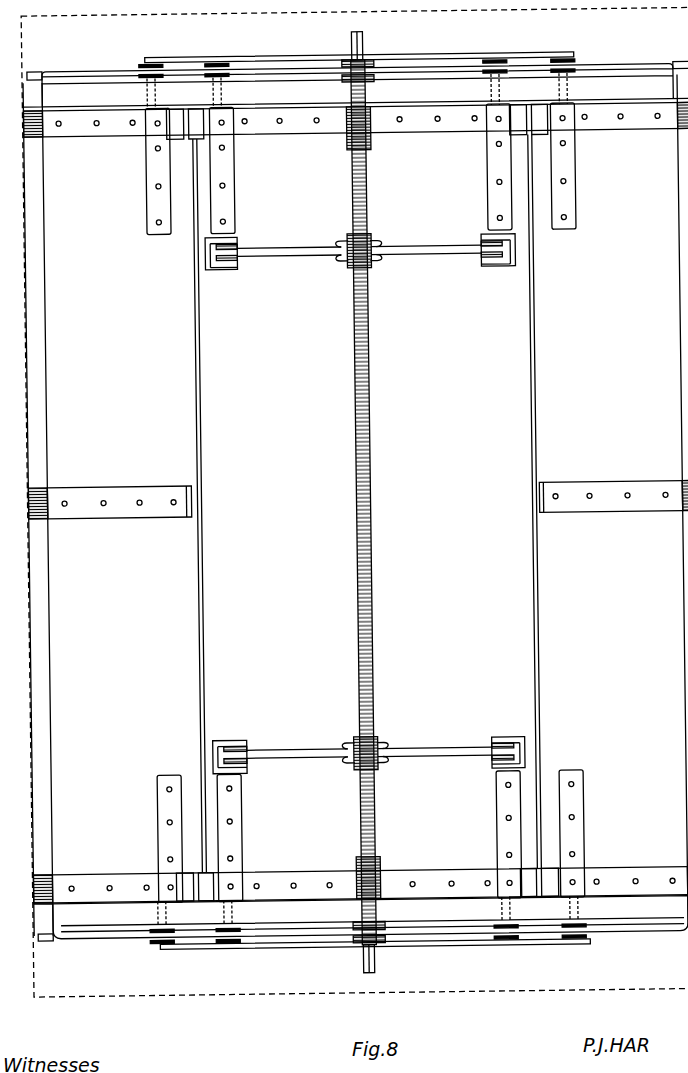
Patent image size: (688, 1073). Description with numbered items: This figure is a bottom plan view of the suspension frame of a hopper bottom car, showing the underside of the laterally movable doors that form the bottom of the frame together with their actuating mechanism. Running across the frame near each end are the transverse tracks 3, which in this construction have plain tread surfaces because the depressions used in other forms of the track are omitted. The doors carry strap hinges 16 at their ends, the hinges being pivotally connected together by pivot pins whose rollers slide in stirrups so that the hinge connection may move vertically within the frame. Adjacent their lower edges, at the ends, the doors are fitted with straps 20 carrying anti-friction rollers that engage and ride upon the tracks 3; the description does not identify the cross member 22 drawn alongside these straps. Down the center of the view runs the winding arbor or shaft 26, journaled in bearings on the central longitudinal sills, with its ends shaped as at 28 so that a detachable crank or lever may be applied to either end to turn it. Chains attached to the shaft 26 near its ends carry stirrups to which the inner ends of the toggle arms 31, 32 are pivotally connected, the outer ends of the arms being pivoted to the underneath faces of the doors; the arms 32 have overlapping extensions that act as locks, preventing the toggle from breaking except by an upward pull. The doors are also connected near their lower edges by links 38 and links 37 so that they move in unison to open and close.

The transverse track 3 is at (613, 65).
The strap hinge 16 is at (302, 134).
The strap 20 is at (156, 197).
The cross bar 22 is at (88, 130).
The winding arbor or shaft 26 is at (372, 180).
The shaped shaft end 28 is at (369, 32).
The toggle arm 31 is at (451, 251).
The toggle arm 32 is at (294, 249).
The link 37 is at (189, 55).
The link 38 is at (269, 54).